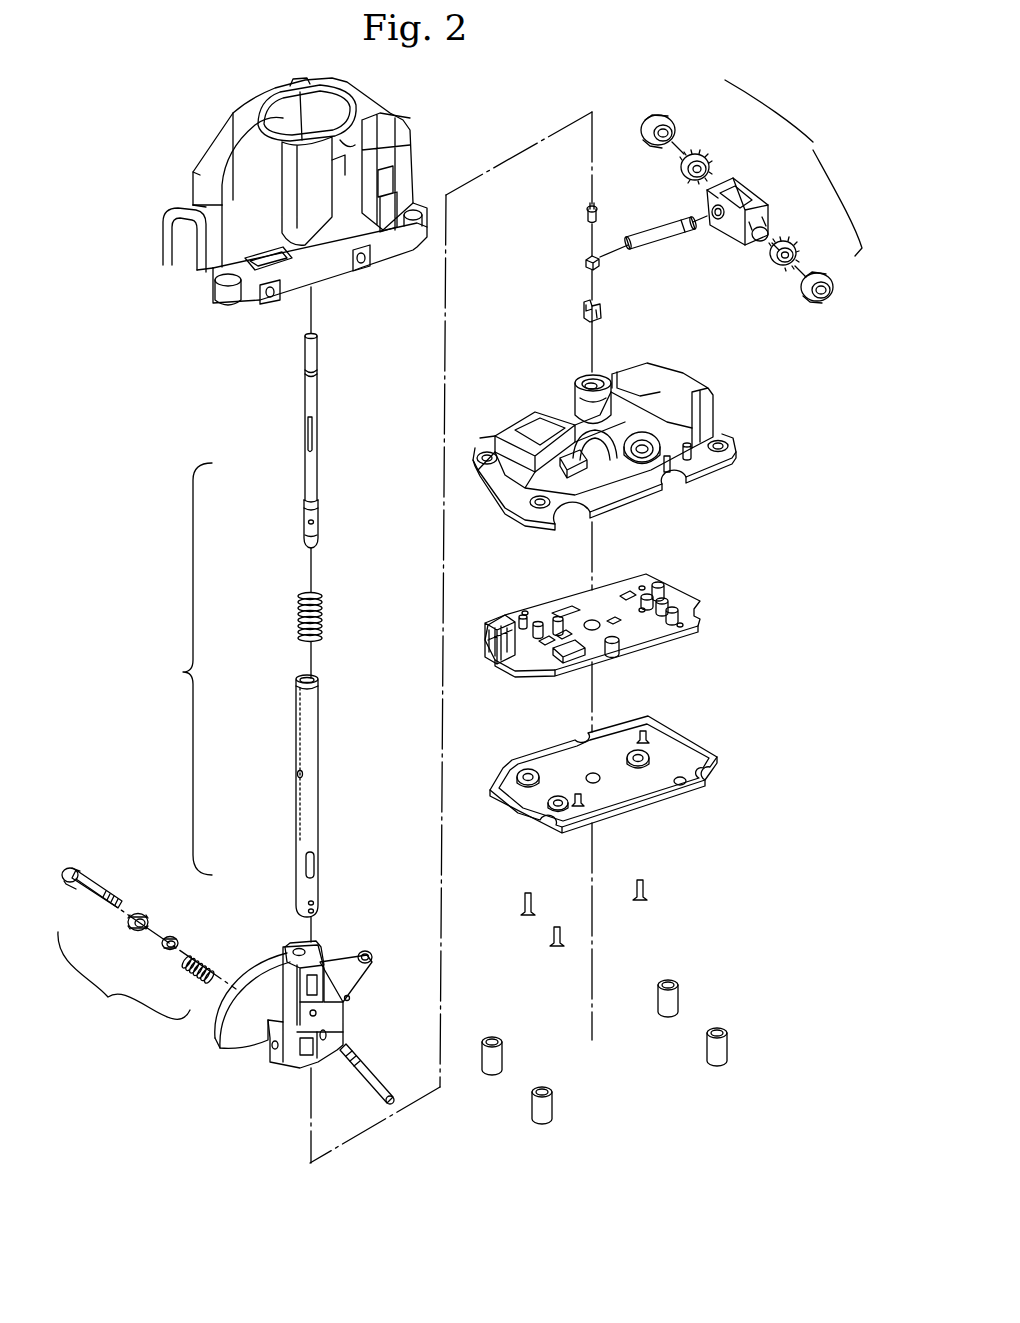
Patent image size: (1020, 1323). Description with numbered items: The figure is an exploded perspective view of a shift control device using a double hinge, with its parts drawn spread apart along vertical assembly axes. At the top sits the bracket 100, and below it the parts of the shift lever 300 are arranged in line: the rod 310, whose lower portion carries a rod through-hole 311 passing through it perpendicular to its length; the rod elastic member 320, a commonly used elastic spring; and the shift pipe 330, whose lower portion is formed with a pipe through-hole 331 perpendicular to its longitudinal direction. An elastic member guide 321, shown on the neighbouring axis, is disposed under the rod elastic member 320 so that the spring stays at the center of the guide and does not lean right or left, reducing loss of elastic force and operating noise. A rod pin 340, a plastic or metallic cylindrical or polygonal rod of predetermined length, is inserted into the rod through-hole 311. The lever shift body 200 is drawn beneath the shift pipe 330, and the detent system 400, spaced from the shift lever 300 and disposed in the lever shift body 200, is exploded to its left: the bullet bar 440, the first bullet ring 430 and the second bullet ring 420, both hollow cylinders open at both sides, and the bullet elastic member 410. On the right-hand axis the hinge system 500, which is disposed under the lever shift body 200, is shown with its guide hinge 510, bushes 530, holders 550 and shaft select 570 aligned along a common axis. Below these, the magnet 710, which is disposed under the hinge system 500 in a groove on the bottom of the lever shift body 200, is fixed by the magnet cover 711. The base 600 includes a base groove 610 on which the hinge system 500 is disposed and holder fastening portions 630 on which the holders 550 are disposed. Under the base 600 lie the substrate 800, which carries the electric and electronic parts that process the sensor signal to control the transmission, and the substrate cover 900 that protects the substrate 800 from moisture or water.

The bracket 100 is at (222, 143).
The lever shift body 200 is at (258, 1056).
The shift lever 300 is at (176, 669).
The rod 310 is at (305, 465).
The rod through-hole 311 is at (300, 521).
The rod elastic member 320 is at (297, 620).
The elastic member guide 321 is at (585, 214).
The shift pipe 330 is at (300, 754).
The pipe through-hole 331 is at (298, 866).
The rod pin 340 is at (368, 1068).
The detent system 400 is at (124, 981).
The bullet elastic member 410 is at (196, 977).
The second bullet ring 420 is at (168, 951).
The first bullet ring 430 is at (138, 932).
The bullet bar 440 is at (98, 898).
The hinge system 500 is at (793, 168).
The guide hinge 510 is at (745, 184).
The bush 530 is at (706, 153).
The holder 550 is at (666, 117).
The shaft select 570 is at (665, 238).
The base 600 is at (723, 419).
The base groove 610 is at (633, 385).
The holder fastening portion 630 is at (582, 380).
The magnet 710 is at (585, 262).
The magnet cover 711 is at (585, 315).
The substrate 800 is at (711, 593).
The substrate cover 900 is at (712, 738).